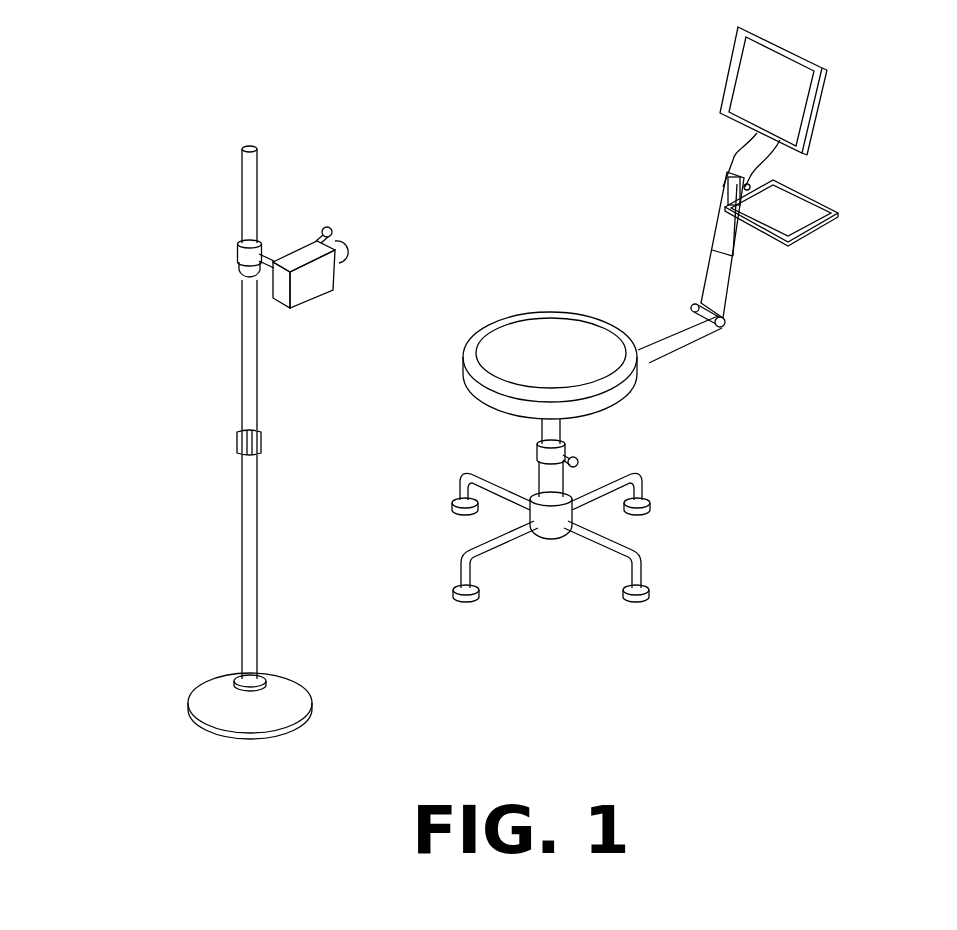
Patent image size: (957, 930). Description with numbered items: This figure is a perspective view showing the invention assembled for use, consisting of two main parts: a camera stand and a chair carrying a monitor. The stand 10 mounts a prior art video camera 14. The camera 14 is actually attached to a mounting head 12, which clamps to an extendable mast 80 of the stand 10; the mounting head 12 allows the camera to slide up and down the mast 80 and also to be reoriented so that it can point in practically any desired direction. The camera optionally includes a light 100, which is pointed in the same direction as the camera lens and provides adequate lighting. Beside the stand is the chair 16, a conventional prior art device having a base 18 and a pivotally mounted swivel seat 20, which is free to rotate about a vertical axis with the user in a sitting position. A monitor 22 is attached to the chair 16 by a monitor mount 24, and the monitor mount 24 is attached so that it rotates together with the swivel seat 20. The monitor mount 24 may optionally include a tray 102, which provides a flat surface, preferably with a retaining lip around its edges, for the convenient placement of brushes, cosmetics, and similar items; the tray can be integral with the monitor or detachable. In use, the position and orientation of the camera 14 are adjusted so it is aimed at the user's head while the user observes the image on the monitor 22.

The stand 10 is at (252, 508).
The mounting head 12 is at (240, 257).
The video camera 14 is at (310, 282).
The chair 16 is at (692, 357).
The base 18 is at (598, 538).
The swivel seat 20 is at (563, 342).
The monitor 22 is at (760, 90).
The monitor mount 24 is at (727, 228).
The extendable mast 80 is at (247, 183).
The light 100 is at (329, 227).
The tray 102 is at (783, 212).